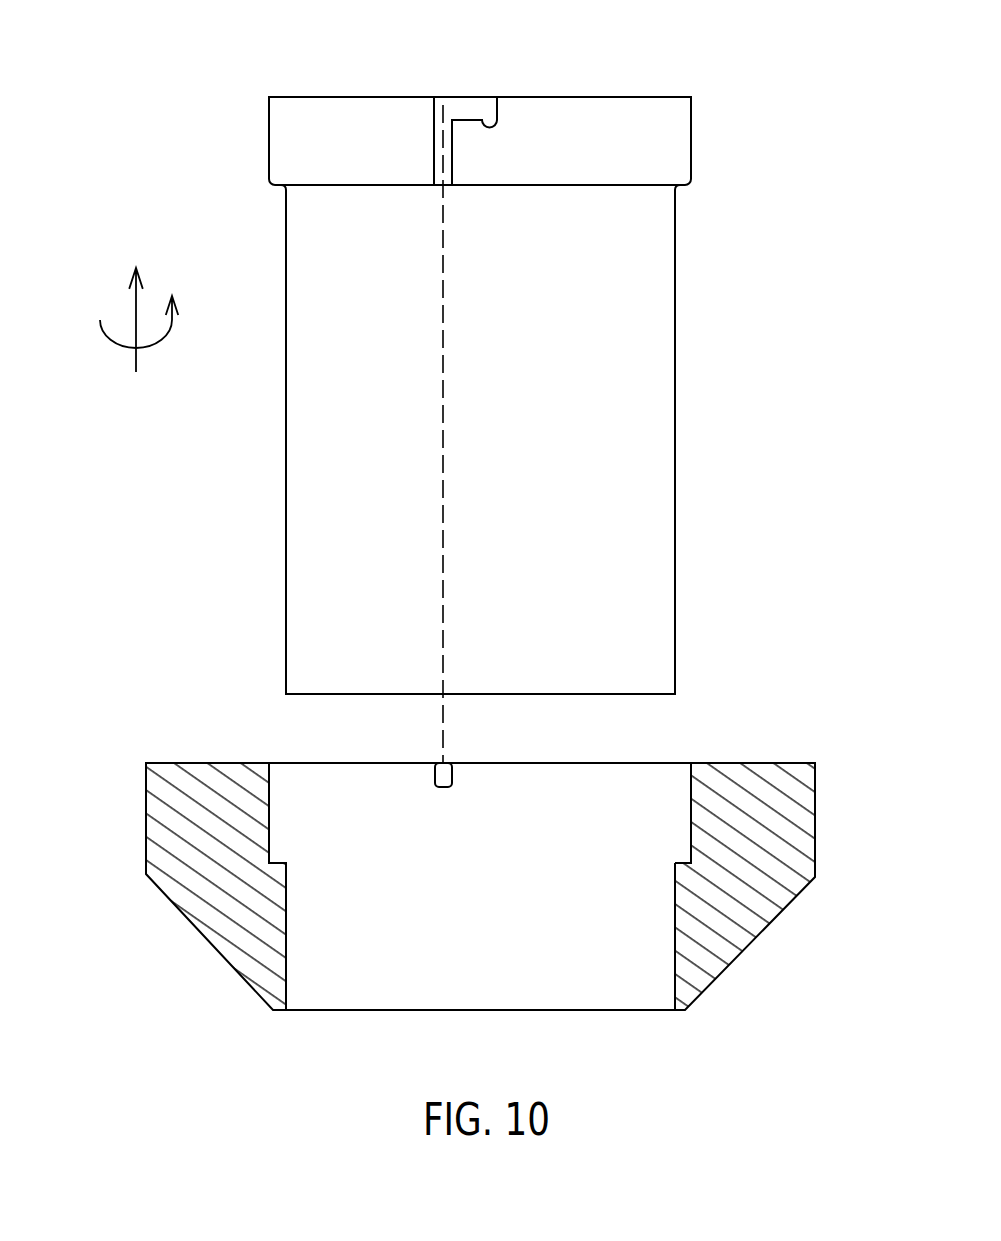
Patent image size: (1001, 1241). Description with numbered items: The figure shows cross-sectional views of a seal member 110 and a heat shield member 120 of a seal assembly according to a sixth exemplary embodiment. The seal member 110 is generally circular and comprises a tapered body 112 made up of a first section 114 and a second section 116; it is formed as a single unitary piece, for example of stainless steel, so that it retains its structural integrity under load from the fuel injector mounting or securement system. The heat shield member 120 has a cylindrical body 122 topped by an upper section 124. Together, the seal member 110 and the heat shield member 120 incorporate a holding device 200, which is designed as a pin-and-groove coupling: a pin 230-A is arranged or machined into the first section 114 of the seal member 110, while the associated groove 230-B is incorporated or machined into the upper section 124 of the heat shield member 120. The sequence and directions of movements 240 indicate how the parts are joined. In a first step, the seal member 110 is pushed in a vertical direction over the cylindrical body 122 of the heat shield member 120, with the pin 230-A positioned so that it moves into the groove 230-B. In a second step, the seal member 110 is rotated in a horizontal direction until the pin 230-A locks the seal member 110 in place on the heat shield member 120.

The seal member 110 is at (833, 670).
The tapered body 112 is at (146, 815).
The first section 114 is at (692, 815).
The second section 116 is at (675, 935).
The heat shield member 120 is at (713, 435).
The cylindrical body 122 is at (286, 445).
The upper section 124 is at (268, 137).
The holding device 200 is at (446, 78).
The pin 230-A is at (452, 787).
The groove 230-B is at (473, 107).
The sequence and directions of movements 240 is at (92, 296).